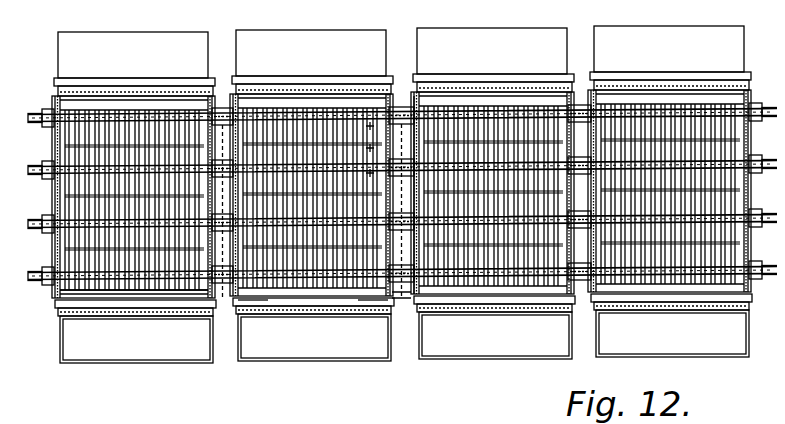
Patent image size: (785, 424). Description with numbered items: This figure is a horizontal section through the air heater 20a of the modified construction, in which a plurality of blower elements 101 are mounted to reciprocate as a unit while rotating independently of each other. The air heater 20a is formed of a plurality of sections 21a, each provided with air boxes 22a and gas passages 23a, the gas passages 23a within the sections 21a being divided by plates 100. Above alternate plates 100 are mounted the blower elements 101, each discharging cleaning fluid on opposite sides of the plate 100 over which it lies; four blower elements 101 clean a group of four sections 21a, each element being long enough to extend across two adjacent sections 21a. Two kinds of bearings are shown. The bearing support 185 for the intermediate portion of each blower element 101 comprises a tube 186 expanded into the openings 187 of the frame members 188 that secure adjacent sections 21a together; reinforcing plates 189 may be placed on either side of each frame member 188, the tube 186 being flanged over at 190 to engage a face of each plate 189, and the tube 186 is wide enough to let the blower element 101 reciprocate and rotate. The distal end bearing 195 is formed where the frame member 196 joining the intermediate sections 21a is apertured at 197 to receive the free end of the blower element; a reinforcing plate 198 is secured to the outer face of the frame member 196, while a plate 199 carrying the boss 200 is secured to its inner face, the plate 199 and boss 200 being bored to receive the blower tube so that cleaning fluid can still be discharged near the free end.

The air heater 20a is at (80, 346).
The section 21a is at (127, 99).
The air box 22a is at (141, 284).
The gas passage 23a is at (117, 284).
The plate 100 is at (58, 138).
The blower element 101 is at (29, 168).
The bearing support 185 is at (219, 285).
The tube 186 is at (216, 100).
The opening 187 is at (243, 289).
The frame member 188 is at (202, 286).
The reinforcing plate 189 is at (240, 112).
The flange 190 is at (258, 289).
The bearing 195 is at (428, 92).
The frame member 196 is at (340, 130).
The aperture 197 is at (412, 95).
The reinforcing plate 198 is at (388, 96).
The plate 199 is at (392, 292).
The boss 200 is at (368, 287).